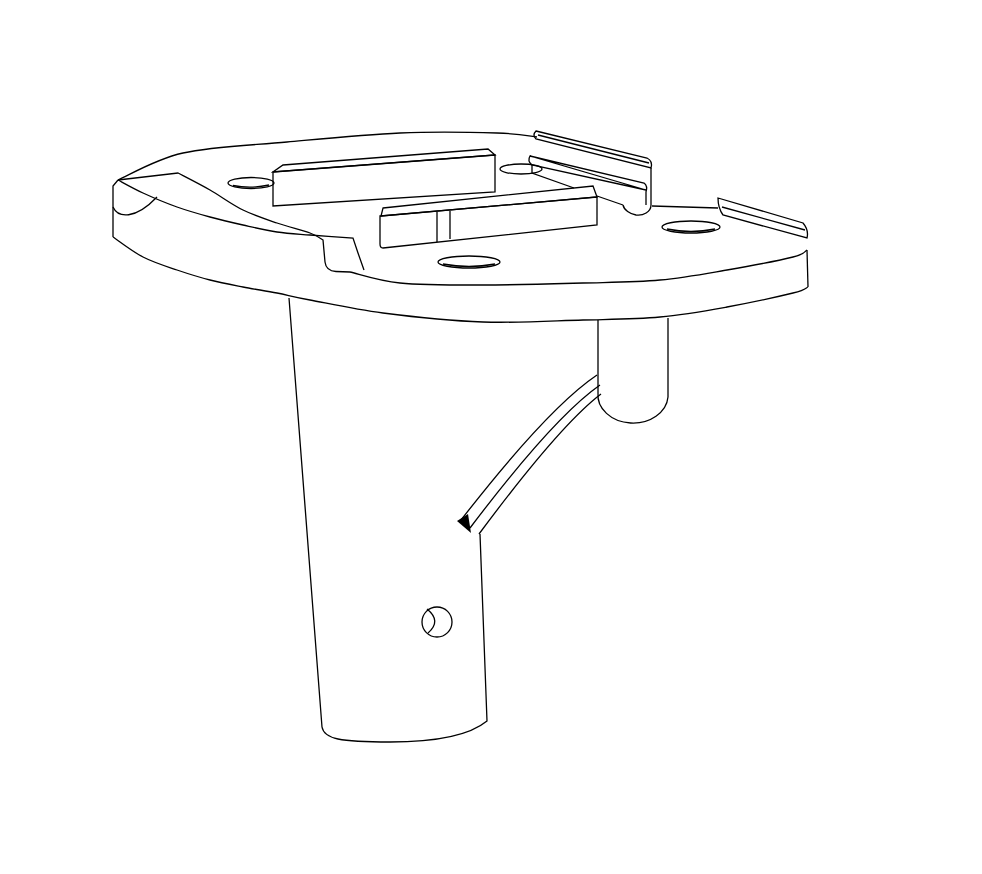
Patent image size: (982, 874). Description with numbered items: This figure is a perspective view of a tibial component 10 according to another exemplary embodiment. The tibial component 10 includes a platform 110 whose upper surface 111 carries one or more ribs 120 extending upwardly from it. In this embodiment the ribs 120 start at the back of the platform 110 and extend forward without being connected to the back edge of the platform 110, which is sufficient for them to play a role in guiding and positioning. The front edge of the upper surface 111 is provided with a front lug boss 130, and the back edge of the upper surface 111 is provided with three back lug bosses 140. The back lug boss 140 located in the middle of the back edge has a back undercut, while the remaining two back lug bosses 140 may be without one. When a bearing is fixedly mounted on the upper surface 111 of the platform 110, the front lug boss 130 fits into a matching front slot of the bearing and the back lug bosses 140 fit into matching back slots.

The tibial component 10 is at (148, 110).
The platform 110 is at (717, 292).
The upper surface 111 is at (772, 260).
The rib 120 is at (303, 167).
The front lug boss 130 is at (113, 207).
The back lug boss 140 is at (595, 141).